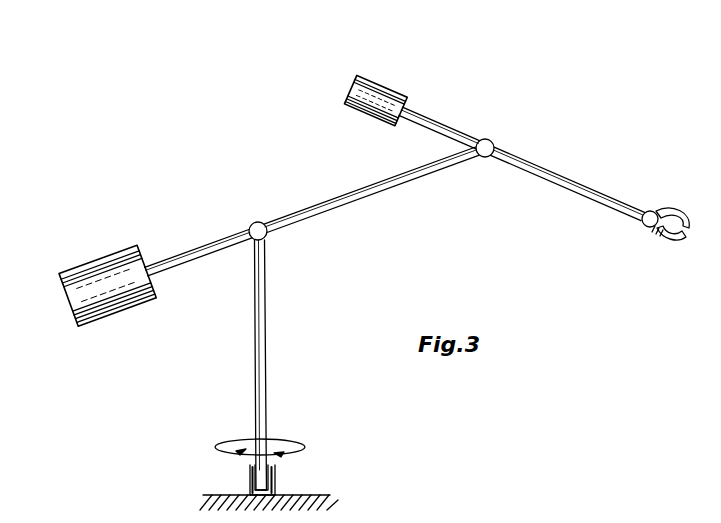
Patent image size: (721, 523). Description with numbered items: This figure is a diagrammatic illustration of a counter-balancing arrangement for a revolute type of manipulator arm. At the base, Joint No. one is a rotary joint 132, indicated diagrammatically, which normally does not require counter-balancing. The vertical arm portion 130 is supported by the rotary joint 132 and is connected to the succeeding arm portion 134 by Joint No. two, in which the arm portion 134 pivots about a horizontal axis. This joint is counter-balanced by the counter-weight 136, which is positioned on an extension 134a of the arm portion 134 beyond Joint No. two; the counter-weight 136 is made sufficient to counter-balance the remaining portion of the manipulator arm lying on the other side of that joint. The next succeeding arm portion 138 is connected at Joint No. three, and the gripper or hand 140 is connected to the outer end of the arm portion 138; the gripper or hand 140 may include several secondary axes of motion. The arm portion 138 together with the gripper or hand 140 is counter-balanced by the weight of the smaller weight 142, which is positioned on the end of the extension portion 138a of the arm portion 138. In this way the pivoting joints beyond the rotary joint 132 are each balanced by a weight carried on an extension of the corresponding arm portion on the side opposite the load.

The vertical arm portion 130 is at (254, 371).
The rotary joint 132 is at (250, 478).
The arm portion 134 is at (342, 196).
The extension of the arm 134a is at (192, 250).
The counter-weight 136 is at (114, 318).
The arm portion 138 is at (571, 181).
The extension portion of the arm 138a is at (435, 121).
The gripper or hand 140 is at (653, 213).
The smaller weight 142 is at (350, 108).